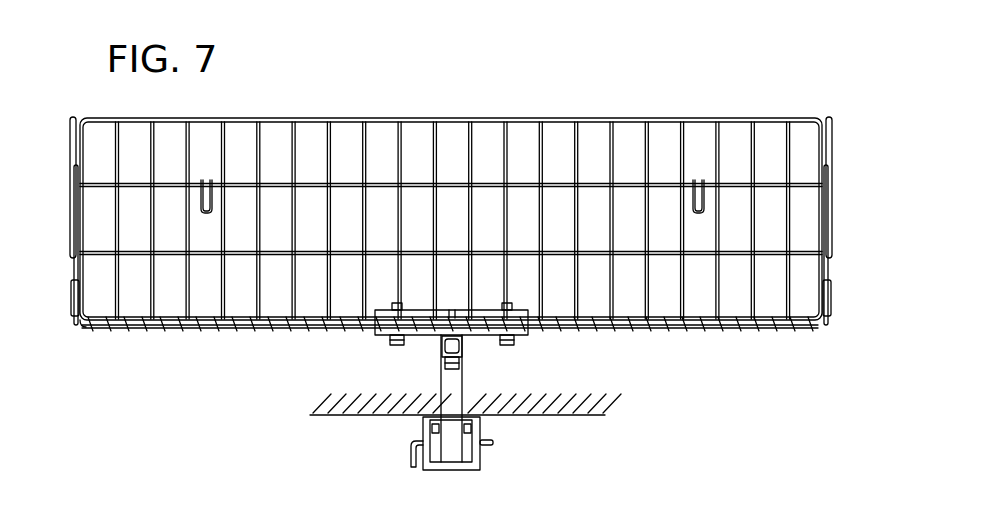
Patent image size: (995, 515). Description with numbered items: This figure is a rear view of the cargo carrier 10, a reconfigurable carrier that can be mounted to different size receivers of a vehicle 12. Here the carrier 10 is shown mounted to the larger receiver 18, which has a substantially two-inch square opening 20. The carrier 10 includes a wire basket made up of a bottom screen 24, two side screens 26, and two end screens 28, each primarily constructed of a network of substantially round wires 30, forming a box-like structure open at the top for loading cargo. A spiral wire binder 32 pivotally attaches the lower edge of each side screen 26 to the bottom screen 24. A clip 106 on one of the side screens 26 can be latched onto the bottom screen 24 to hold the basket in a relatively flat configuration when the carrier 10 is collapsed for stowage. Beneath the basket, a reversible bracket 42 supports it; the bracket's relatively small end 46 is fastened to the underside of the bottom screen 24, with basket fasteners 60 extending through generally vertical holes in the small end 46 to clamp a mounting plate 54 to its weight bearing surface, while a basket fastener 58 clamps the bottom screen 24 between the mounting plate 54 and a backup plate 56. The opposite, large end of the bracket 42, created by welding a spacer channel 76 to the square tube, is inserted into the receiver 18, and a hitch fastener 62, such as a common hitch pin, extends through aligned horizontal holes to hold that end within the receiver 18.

The cargo carrier 10 is at (767, 75).
The vehicle 12 is at (571, 416).
The larger receiver 18 is at (423, 431).
The square opening 20 is at (468, 454).
The bottom screen 24 is at (207, 330).
The side screens 26 is at (500, 118).
The end screens 28 is at (70, 215).
The wires 30 is at (362, 168).
The spiral wire binder 32 is at (727, 330).
The reversible bracket 42 is at (464, 373).
The small end 46 is at (463, 350).
The mounting plate 54 is at (378, 338).
The backup plate 56 is at (452, 311).
The basket fastener 58 is at (510, 303).
The basket fasteners 60 is at (445, 364).
The hitch fastener 62 is at (409, 456).
The channel 76 is at (473, 430).
The clip 106 is at (693, 207).